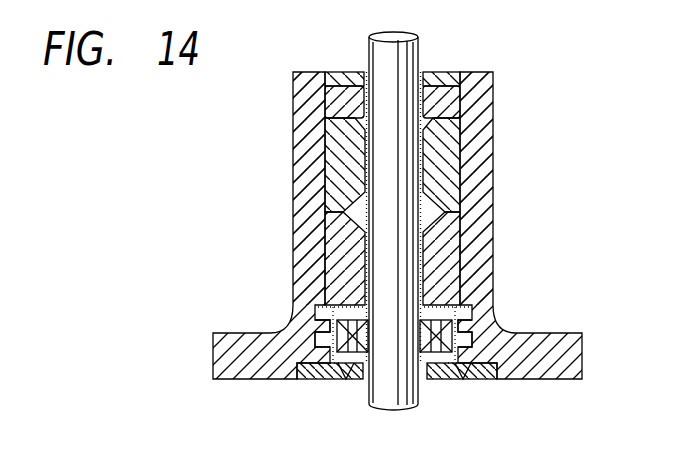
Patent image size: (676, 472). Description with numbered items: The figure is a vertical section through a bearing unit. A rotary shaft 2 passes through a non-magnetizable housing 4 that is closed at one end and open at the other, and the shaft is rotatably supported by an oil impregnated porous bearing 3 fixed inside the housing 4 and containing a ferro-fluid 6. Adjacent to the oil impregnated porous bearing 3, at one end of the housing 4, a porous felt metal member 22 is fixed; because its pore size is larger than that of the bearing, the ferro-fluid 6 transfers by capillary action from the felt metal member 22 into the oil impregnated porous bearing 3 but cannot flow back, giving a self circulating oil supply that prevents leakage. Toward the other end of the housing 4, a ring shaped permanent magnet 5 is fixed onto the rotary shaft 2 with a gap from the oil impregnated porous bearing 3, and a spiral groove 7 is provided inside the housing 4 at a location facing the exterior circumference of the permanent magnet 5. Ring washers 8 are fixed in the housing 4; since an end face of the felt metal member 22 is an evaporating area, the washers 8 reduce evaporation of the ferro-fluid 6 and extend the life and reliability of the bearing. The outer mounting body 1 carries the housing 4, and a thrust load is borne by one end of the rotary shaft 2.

The housing with mounting flange 1 is at (497, 287).
The rotary shaft 2 is at (378, 53).
The oil impregnated porous bearing 3 is at (452, 245).
The housing 4 is at (305, 177).
The ring shaped permanent magnet 5 is at (340, 352).
The ferro-fluid 6 is at (318, 312).
The spiral groove 7 is at (317, 340).
The ring washer 8 is at (440, 72).
The porous felt metal member 22 is at (463, 97).